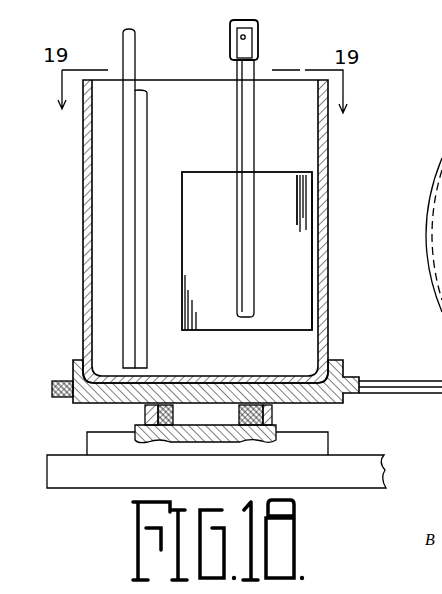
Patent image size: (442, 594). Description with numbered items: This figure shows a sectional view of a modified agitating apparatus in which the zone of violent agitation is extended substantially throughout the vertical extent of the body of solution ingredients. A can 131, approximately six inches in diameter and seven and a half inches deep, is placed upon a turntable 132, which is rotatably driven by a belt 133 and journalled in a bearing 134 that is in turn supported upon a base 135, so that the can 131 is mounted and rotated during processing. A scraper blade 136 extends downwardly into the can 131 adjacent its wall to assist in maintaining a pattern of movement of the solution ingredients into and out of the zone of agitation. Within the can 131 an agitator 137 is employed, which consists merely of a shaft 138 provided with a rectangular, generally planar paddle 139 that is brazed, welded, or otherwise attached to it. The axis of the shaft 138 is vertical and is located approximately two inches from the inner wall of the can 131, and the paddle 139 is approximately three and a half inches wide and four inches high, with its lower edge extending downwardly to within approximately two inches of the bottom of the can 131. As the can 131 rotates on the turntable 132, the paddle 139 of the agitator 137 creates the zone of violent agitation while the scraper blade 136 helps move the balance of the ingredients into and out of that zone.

The can 131 is at (327, 244).
The turntable 132 is at (341, 361).
The belt 133 is at (398, 381).
The bearing 134 is at (276, 421).
The base 135 is at (316, 446).
The scraper blade 136 is at (147, 110).
The agitator 137 is at (304, 143).
The shaft 138 is at (244, 125).
The paddle 139 is at (313, 202).